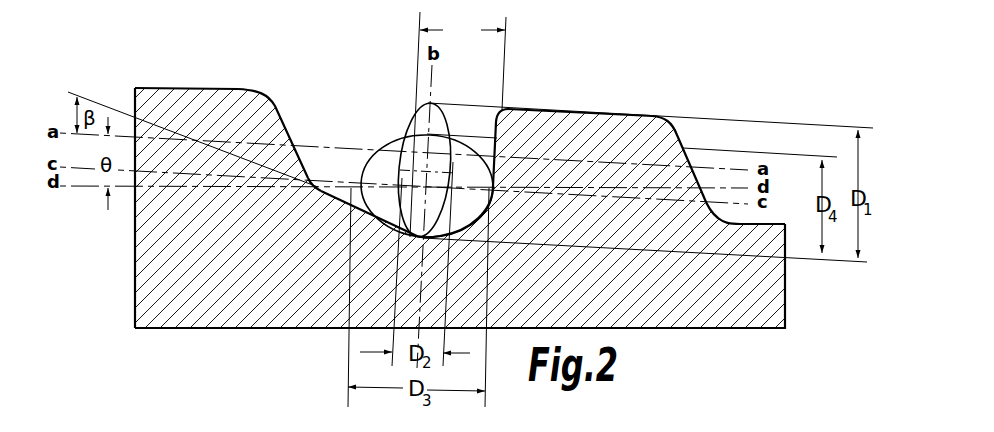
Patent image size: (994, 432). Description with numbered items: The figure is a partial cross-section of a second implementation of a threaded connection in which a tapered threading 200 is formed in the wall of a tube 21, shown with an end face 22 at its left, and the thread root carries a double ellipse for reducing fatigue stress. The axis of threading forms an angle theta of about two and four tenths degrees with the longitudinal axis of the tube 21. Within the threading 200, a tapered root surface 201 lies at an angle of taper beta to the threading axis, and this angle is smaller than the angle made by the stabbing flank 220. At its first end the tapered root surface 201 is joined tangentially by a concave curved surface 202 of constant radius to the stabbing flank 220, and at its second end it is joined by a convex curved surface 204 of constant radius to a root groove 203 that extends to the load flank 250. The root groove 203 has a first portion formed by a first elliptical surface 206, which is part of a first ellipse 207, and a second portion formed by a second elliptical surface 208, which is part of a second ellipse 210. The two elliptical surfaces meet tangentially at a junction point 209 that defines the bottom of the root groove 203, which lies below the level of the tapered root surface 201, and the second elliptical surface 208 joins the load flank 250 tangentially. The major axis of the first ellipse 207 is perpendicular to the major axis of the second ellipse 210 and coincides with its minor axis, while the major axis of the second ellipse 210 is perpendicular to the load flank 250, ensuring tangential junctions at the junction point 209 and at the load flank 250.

The tapered threading 200 is at (223, 82).
The tube 21 is at (134, 312).
The end face 22 is at (135, 283).
The stabbing flank 220 is at (289, 124).
The concave curved surface 202 is at (318, 183).
The tapered root surface 201 is at (343, 190).
The convex curved surface 204 is at (402, 206).
The second elliptical surface 208 is at (463, 238).
The junction point 209 is at (424, 240).
The load flank 250 is at (496, 128).
The second ellipse 210 is at (363, 170).
The first ellipse 207 is at (405, 128).
The first elliptical surface 206 is at (419, 233).
The root groove 203 is at (458, 124).